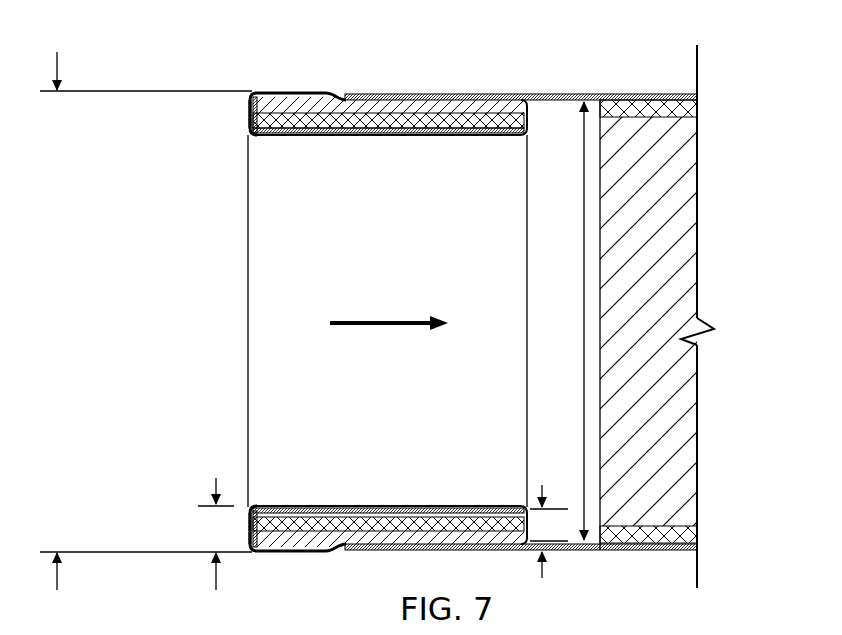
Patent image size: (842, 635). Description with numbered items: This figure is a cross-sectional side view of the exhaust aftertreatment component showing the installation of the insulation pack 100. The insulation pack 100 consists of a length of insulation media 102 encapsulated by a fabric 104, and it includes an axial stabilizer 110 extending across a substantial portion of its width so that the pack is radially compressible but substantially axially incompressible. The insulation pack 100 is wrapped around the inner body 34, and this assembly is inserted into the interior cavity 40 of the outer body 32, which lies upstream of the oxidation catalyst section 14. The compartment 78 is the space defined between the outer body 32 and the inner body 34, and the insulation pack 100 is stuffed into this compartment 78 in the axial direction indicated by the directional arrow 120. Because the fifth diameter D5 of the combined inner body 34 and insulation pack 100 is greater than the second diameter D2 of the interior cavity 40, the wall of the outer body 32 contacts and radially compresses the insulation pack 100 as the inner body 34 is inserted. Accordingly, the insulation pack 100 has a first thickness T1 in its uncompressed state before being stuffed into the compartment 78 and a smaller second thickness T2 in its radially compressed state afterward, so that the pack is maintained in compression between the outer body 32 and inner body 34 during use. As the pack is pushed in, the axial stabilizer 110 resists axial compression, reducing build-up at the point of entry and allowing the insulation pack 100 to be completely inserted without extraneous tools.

The insulation pack 100 is at (379, 288).
The fabric 104 is at (294, 92).
The insulation media 102 is at (320, 97).
The compartment 78 is at (346, 95).
The outer body 32 is at (521, 297).
The axial stabilizer 110 is at (493, 101).
The inner body 34 is at (262, 144).
The oxidation catalyst section 14 is at (680, 149).
The directional arrow 120 is at (350, 325).
The interior cavity 40 is at (449, 402).
The fifth diameter D5 is at (60, 68).
The second diameter D2 is at (584, 213).
The first thickness T1 is at (215, 490).
The second thickness T2 is at (541, 565).